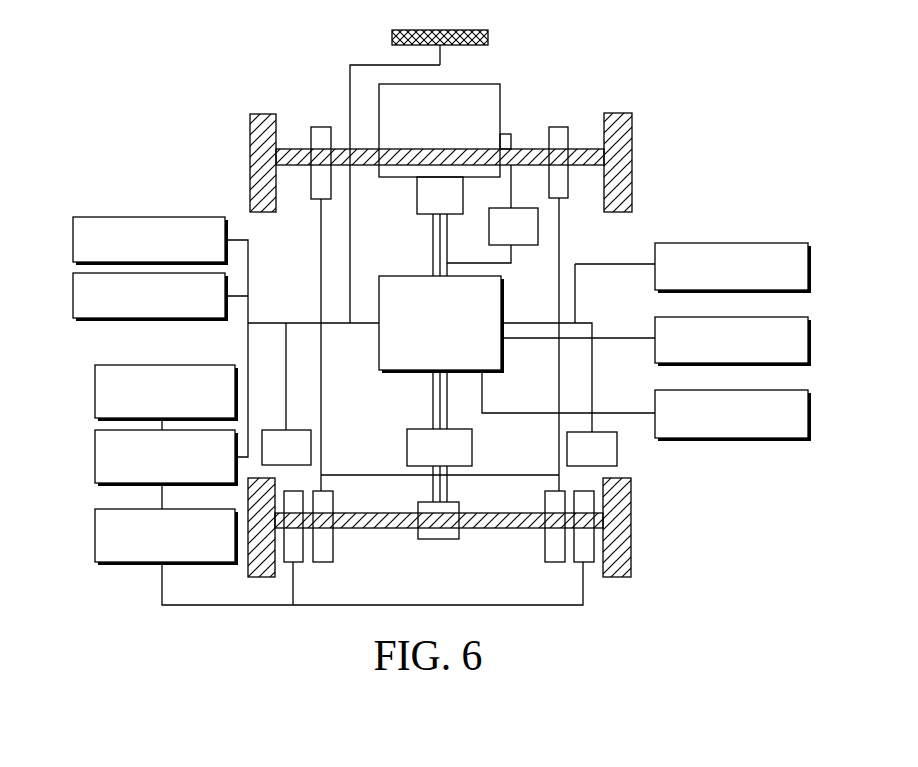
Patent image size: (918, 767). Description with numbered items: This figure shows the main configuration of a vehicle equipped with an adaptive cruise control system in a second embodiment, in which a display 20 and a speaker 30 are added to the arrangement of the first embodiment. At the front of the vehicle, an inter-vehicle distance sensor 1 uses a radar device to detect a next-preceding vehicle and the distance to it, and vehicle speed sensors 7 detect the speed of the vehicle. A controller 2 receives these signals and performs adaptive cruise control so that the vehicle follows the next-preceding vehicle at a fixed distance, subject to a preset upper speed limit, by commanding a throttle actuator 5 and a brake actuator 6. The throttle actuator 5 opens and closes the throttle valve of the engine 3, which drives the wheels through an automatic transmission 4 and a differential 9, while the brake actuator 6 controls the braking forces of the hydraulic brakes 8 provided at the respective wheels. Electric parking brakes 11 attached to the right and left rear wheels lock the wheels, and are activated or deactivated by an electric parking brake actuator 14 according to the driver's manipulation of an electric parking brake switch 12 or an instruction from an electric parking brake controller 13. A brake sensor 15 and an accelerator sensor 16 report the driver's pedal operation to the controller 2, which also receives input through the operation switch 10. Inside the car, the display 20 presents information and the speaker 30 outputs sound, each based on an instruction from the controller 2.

The inter-vehicle distance sensor 1 is at (487, 31).
The controller 2 is at (391, 276).
The engine 3 is at (494, 84).
The automatic transmission 4 is at (417, 194).
The throttle actuator 5 is at (525, 246).
The brake actuator 6 is at (407, 447).
The vehicle speed sensor 7 is at (280, 430).
The hydraulic brake 8 is at (325, 127).
The differential 9 is at (438, 539).
The operation switch 10 is at (670, 243).
The electric parking brake 11 is at (293, 562).
The electric parking brake switch 12 is at (95, 390).
The electric parking brake controller 13 is at (95, 456).
The electric parking brake actuator 14 is at (95, 535).
The brake sensor 15 is at (86, 318).
The accelerator sensor 16 is at (86, 217).
The display 20 is at (670, 317).
The speaker 30 is at (670, 390).